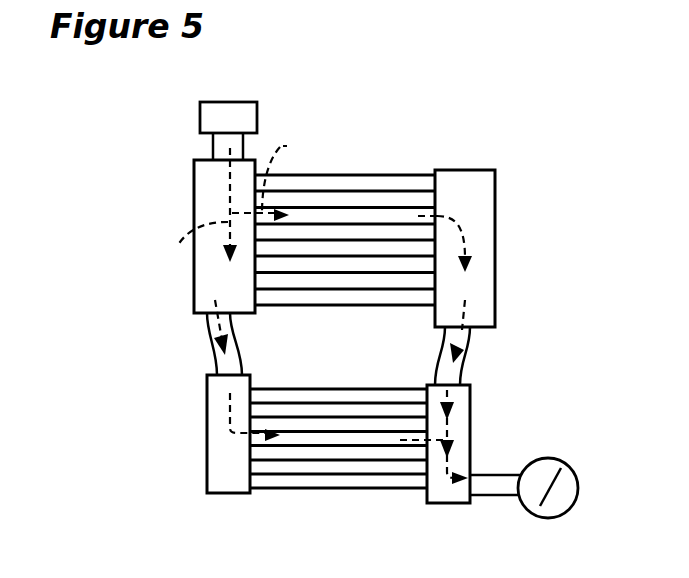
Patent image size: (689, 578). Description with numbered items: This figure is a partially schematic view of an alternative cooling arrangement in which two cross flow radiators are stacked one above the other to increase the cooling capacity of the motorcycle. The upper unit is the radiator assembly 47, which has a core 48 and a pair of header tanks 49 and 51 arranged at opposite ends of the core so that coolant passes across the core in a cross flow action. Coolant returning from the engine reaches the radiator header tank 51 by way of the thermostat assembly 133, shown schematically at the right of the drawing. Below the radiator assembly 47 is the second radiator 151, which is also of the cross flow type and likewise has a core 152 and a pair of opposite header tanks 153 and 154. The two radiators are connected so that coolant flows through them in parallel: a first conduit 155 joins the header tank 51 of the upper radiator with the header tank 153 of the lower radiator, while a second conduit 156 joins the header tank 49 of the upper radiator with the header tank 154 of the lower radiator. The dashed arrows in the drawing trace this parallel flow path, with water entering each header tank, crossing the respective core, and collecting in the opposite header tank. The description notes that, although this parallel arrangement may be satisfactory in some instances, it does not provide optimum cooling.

The radiator assembly 47 is at (360, 229).
The core 48 is at (385, 175).
The header tank 49 is at (495, 241).
The header tank 51 is at (194, 207).
The thermostat assembly 133 is at (578, 485).
The second radiator 151 is at (340, 465).
The core 152 is at (297, 493).
The header tank 153 is at (207, 430).
The header tank 154 is at (470, 437).
The first conduit 155 is at (207, 337).
The second conduit 156 is at (465, 360).